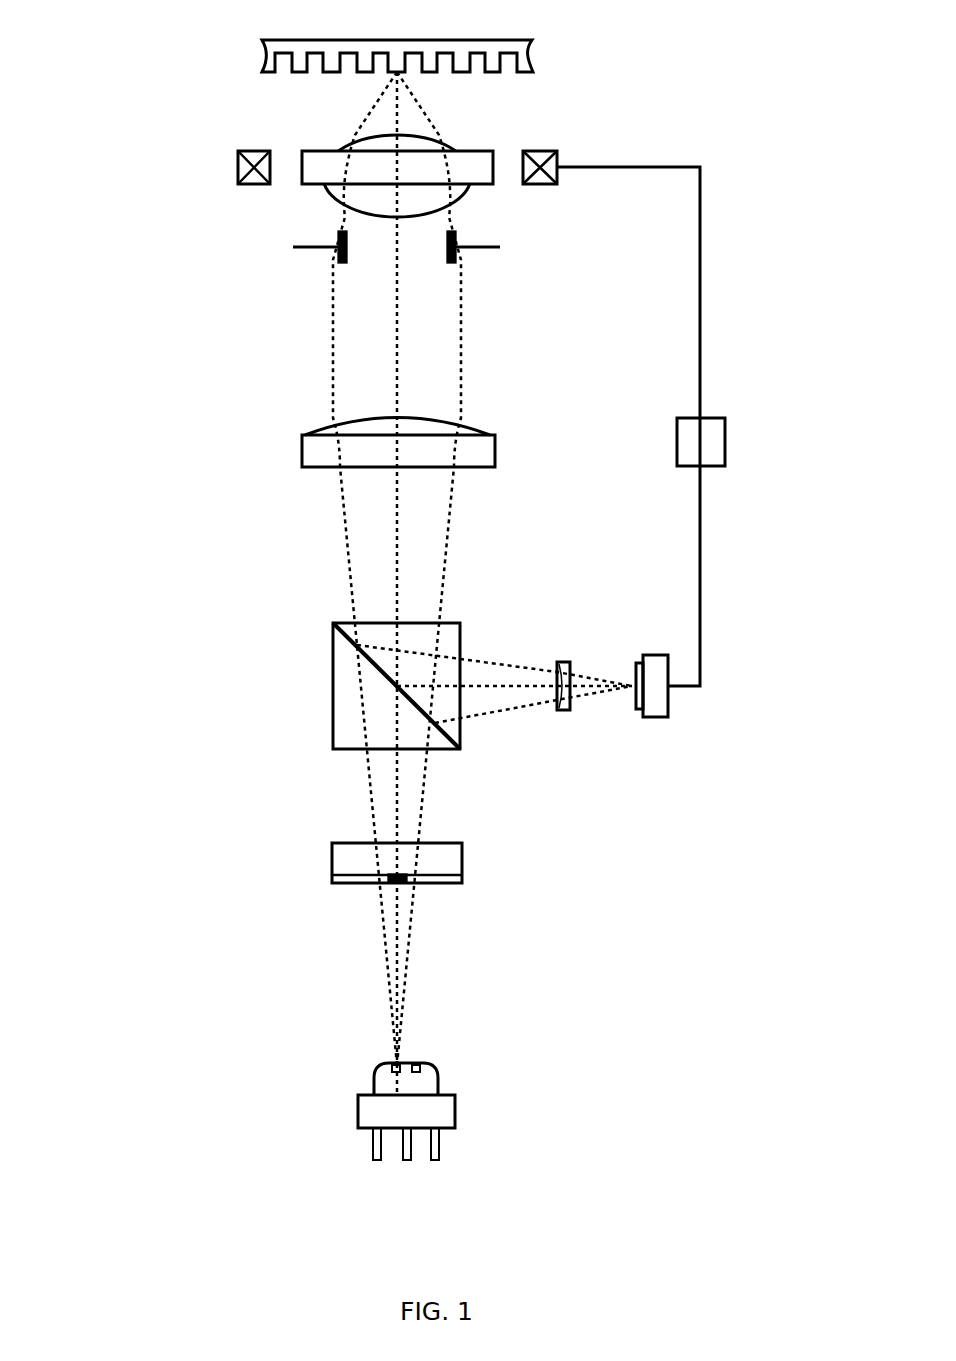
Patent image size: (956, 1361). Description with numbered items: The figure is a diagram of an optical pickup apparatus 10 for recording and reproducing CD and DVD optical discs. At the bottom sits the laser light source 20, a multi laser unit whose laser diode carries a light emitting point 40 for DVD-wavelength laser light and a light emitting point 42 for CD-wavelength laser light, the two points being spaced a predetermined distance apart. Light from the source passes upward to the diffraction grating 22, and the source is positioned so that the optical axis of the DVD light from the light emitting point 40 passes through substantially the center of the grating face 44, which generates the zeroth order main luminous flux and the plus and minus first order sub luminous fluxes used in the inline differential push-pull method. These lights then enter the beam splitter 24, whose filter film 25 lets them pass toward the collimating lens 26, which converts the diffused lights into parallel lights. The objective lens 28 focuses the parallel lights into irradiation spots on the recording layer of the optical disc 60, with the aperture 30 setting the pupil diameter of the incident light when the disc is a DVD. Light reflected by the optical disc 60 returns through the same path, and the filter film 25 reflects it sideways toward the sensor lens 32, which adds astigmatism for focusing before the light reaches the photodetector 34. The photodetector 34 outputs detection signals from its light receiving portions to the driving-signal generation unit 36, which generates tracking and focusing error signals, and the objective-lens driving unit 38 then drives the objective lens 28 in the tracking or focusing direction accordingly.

The optical pickup apparatus 10 is at (175, 498).
The optical disc 60 is at (532, 63).
The objective lens 28 is at (493, 150).
The objective-lens driving unit 38 is at (240, 186).
The aperture 30 is at (310, 248).
The collimating lens 26 is at (495, 435).
The beam splitter 24 is at (377, 717).
The filter film 25 is at (445, 740).
The sensor lens 32 is at (565, 712).
The photodetector 34 is at (655, 719).
The driving-signal generation unit 36 is at (725, 442).
The diffraction grating 22 is at (436, 885).
The grating face 44 is at (440, 884).
The laser light source 20 is at (423, 1074).
The light emitting point 40 is at (396, 1063).
The light emitting point 42 is at (417, 1063).